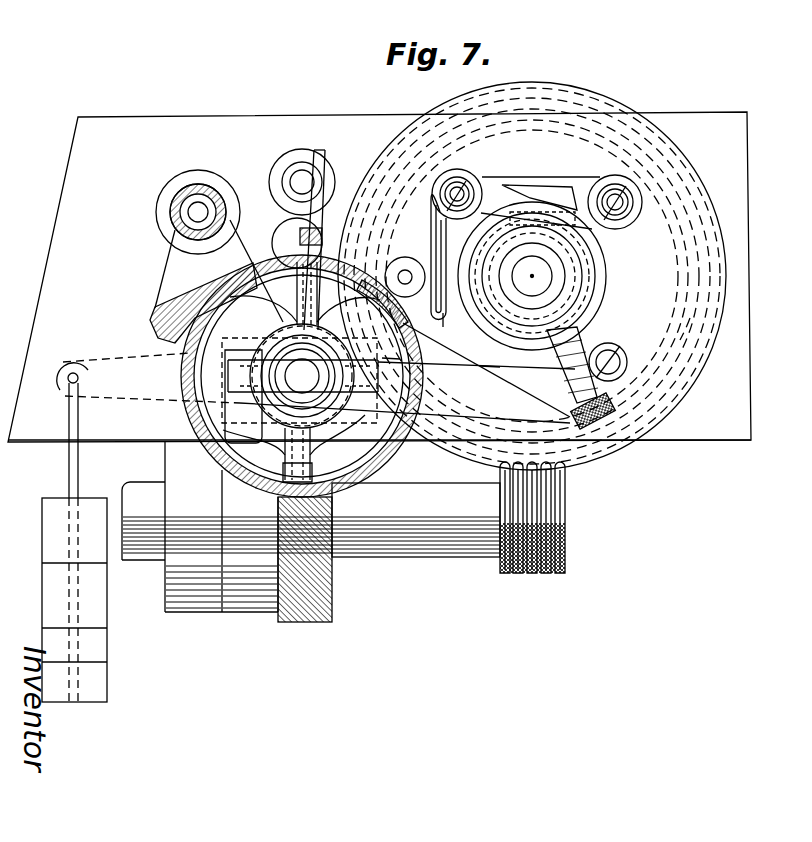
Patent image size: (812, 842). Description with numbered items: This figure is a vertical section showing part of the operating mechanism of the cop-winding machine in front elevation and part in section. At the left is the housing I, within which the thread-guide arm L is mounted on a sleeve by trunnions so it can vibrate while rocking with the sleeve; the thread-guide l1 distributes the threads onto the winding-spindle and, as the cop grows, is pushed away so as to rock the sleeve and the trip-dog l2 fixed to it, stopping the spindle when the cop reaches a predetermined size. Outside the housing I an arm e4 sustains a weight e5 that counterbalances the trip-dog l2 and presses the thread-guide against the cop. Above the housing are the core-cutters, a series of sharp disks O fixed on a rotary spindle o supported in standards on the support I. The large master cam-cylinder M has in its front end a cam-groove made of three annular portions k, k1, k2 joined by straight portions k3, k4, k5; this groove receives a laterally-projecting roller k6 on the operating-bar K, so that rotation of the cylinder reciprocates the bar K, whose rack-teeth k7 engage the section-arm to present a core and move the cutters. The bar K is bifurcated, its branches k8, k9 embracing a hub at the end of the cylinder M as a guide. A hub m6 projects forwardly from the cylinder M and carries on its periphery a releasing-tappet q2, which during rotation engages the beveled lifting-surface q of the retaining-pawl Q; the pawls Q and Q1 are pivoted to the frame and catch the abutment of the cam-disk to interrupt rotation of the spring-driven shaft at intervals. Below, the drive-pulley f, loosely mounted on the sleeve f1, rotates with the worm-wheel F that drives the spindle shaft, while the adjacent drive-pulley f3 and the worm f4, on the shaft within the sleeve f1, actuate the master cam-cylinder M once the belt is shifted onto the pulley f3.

The housing I is at (210, 462).
The master cam-cylinder M is at (600, 452).
The hub m6 is at (598, 286).
The core-cutter disks O is at (202, 172).
The rotary spindle o is at (190, 214).
The rack-teeth k7 is at (170, 358).
The arm e4 is at (187, 378).
The weight e5 is at (71, 600).
The thread-guide l1 is at (325, 178).
The thread-guide arm L is at (292, 235).
The roller k6 is at (398, 270).
The straight portion of cam-groove k5 is at (402, 298).
The annular portion of cam-groove k is at (466, 182).
The retaining-pawl Q1 is at (438, 226).
The operating-bar K is at (430, 256).
The retaining-pawl Q is at (548, 176).
The beveled lifting-surface q is at (539, 197).
The straight portion of cam-groove k3 is at (634, 205).
The branch of bifurcated end k8 is at (628, 224).
The straight portion of cam-groove k4 is at (563, 372).
The branch of bifurcated end k9 is at (577, 338).
The annular portion of cam-groove k1 is at (690, 317).
The annular portion of cam-groove k2 is at (446, 322).
The releasing-tappet q2 is at (423, 377).
The trip-dog l2 is at (495, 381).
The drive-pulley f3 is at (196, 612).
The drive-pulley f is at (252, 612).
The worm-wheel F is at (333, 590).
The sleeve f1 is at (332, 578).
The worm f4 is at (542, 578).